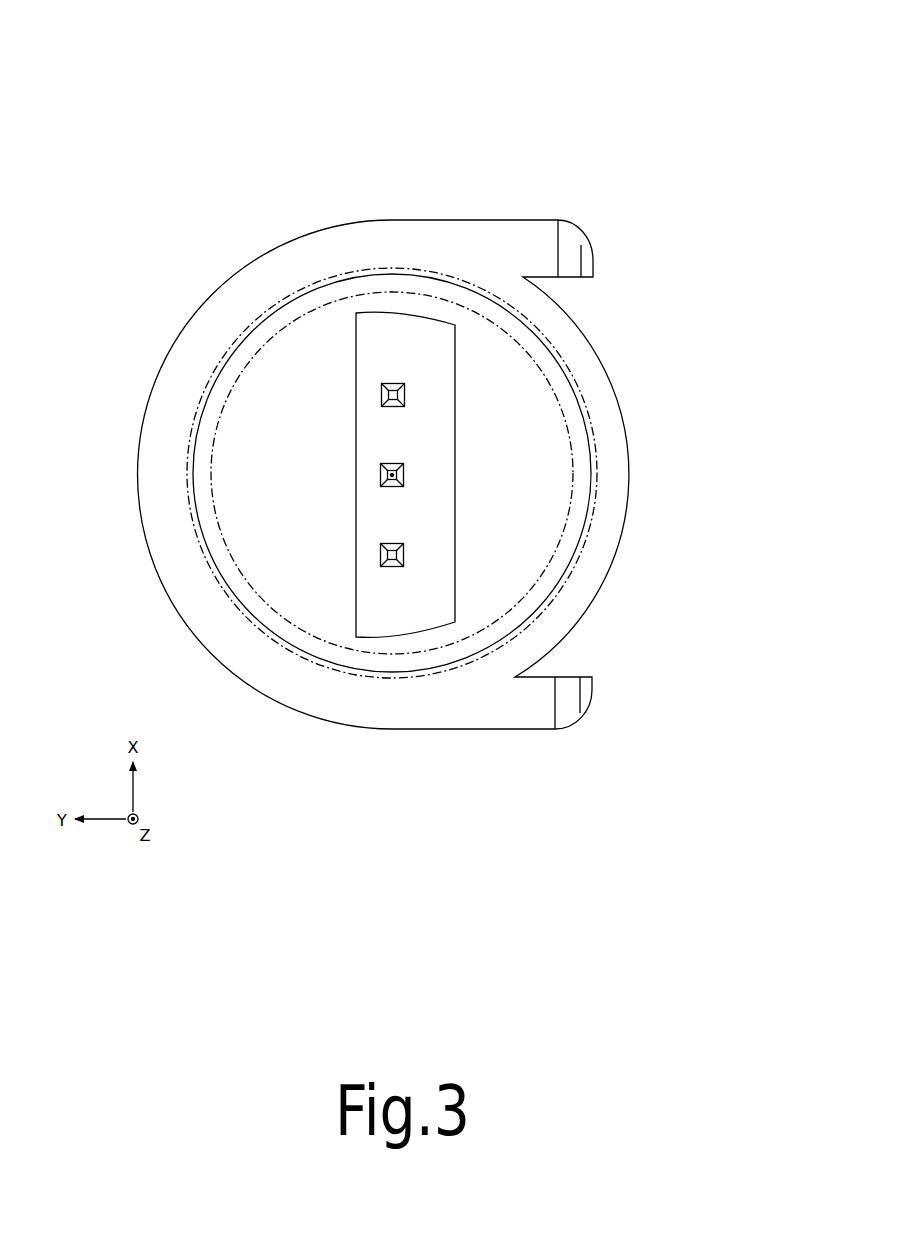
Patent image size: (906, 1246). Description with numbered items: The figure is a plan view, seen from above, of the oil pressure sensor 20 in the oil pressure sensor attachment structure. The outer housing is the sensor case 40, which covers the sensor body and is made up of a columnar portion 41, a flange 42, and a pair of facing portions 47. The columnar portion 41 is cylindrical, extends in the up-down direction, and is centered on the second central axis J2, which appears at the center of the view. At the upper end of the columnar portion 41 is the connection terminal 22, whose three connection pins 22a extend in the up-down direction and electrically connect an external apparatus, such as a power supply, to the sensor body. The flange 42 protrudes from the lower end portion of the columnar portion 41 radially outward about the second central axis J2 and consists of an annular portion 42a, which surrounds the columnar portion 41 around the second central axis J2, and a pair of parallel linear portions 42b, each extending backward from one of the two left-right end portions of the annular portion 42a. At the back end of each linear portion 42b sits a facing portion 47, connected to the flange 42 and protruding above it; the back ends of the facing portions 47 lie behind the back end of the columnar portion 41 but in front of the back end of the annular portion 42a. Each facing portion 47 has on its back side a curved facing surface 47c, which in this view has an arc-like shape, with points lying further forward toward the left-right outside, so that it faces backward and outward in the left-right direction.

The oil pressure sensor 20 is at (582, 103).
The connection terminal 22 is at (346, 523).
The connection pins 22a is at (383, 543).
The sensor case 40 is at (602, 341).
The columnar portion 41 is at (247, 397).
The flange 42 is at (452, 796).
The annular portion 42a is at (448, 697).
The linear portions 42b is at (513, 238).
The facing portion 47 is at (571, 258).
The facing surface 47c is at (573, 228).
The second central axis J2 is at (395, 476).